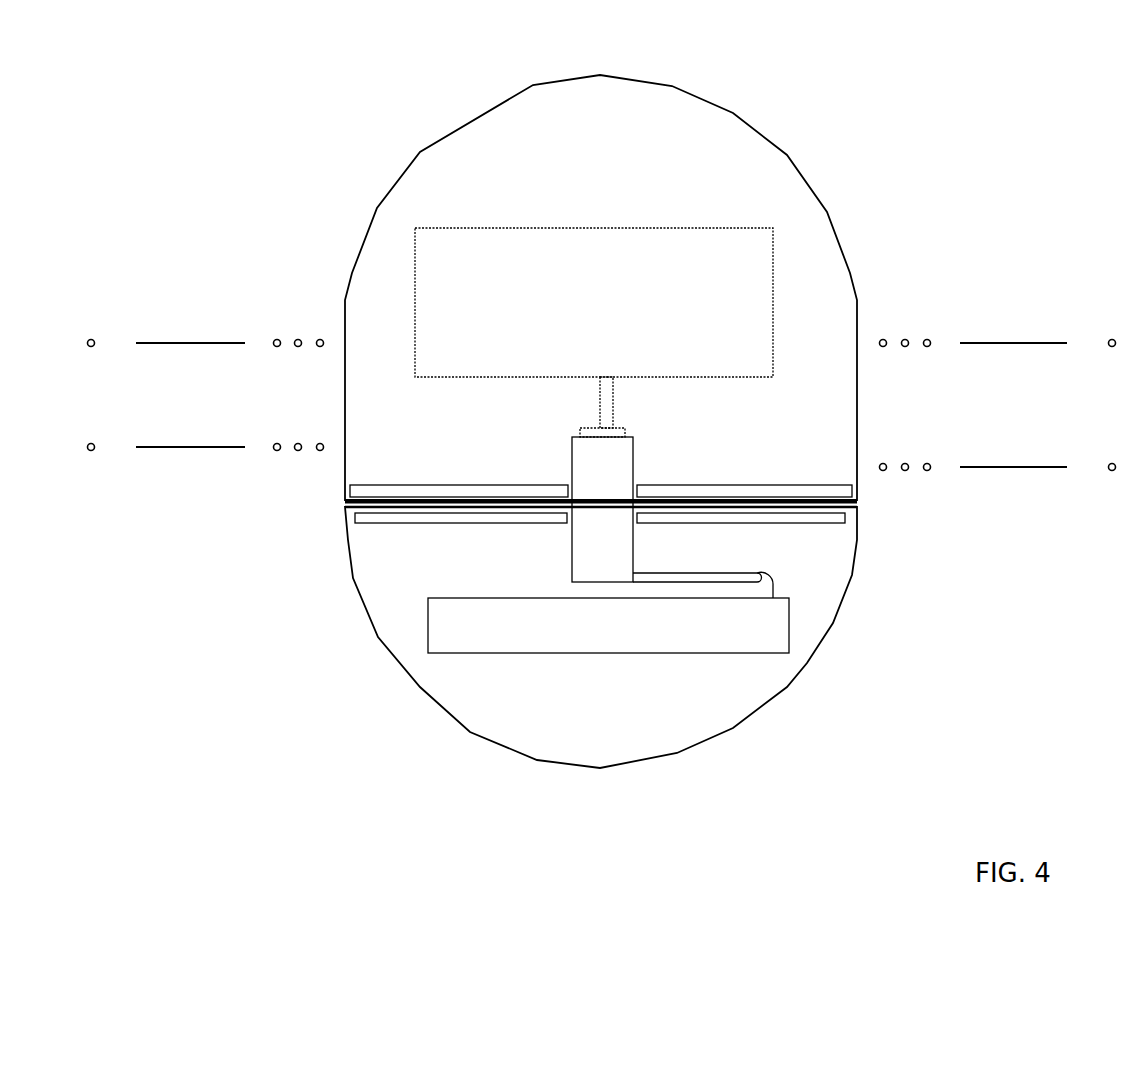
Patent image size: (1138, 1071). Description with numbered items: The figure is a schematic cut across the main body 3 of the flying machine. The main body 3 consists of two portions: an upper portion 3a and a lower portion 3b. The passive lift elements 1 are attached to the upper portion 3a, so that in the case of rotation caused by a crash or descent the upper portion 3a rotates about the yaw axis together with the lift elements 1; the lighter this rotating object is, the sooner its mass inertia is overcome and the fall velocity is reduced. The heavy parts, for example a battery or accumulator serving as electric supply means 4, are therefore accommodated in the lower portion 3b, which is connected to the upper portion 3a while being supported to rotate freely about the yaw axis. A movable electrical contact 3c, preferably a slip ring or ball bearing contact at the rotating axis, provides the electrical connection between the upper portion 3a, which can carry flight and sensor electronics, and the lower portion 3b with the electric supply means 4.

The passive lift elements 1 is at (1027, 353).
The main body 3 is at (642, 410).
The upper portion 3a is at (832, 322).
The lower portion 3b is at (835, 592).
The movable electrical contact 3c is at (618, 495).
The electric supply means 4 is at (525, 653).